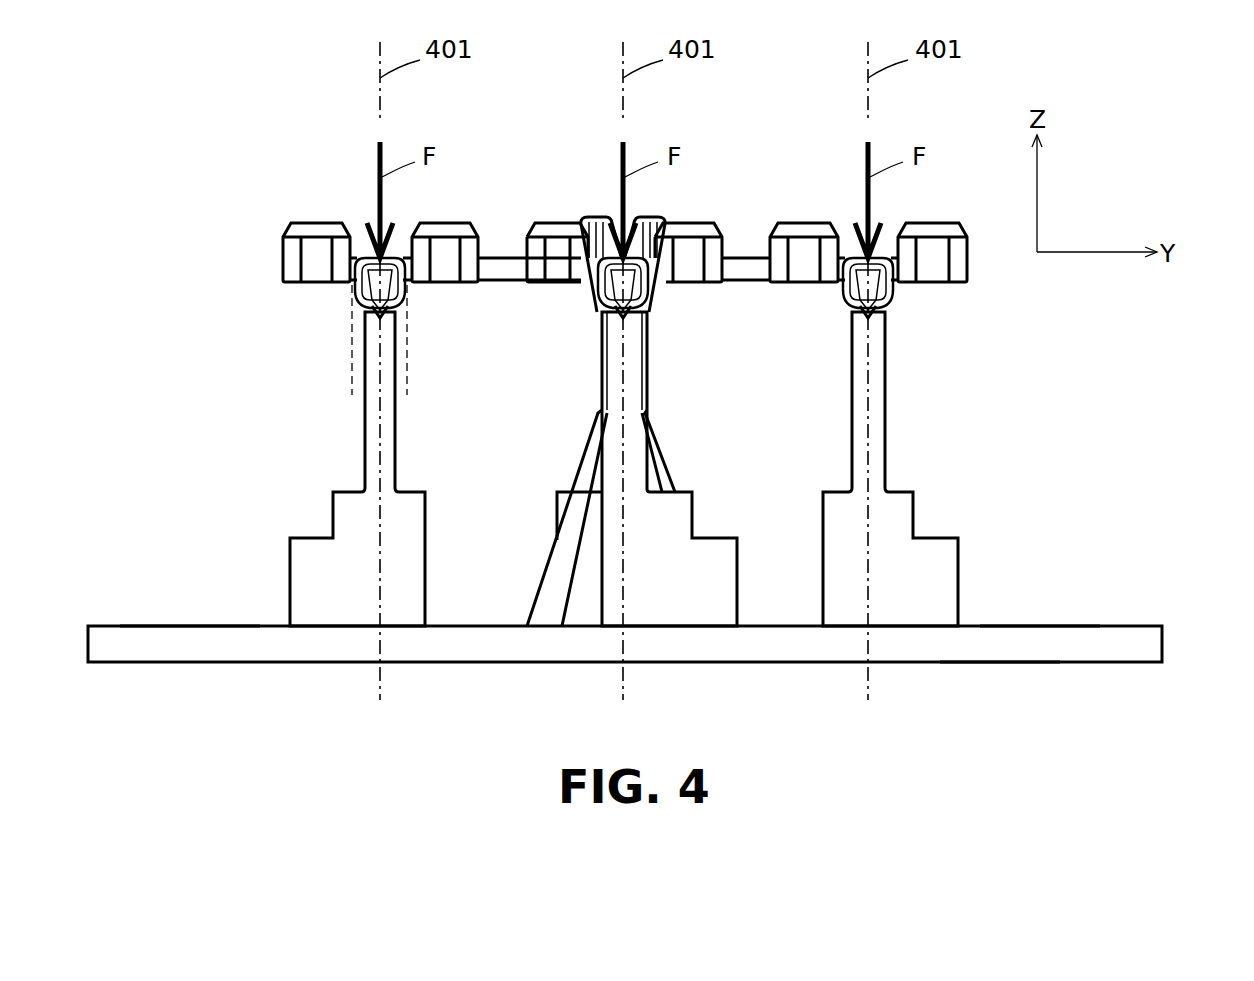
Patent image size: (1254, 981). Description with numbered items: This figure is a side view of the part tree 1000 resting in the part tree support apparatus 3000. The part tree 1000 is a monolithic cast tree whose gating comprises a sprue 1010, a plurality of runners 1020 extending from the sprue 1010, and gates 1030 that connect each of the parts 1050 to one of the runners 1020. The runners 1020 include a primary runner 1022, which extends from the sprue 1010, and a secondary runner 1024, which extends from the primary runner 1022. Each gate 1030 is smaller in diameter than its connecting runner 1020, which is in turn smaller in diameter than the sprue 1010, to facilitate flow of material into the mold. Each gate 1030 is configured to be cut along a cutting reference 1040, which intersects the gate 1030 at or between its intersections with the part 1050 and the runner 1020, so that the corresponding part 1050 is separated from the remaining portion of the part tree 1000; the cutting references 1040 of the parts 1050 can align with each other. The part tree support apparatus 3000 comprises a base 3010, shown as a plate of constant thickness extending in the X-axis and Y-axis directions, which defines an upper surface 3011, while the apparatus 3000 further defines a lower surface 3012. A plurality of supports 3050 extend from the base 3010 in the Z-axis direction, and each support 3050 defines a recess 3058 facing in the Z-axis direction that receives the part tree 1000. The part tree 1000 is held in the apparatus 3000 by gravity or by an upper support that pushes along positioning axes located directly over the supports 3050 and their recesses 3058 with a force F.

The part tree 1000 is at (558, 324).
The part 1050 is at (283, 276).
The gate 1030 is at (526, 367).
The secondary runner 1024 is at (357, 285).
The cutting reference 1040 is at (352, 358).
The recess 3058 is at (403, 315).
The runner 1020 is at (624, 323).
The primary runner 1022 is at (745, 282).
The sprue 1010 is at (670, 462).
The support 3050 is at (653, 469).
The base 3010 is at (175, 625).
The upper surface 3011 is at (1030, 612).
The part tree support apparatus 3000 is at (1144, 626).
The lower surface 3012 is at (1008, 668).